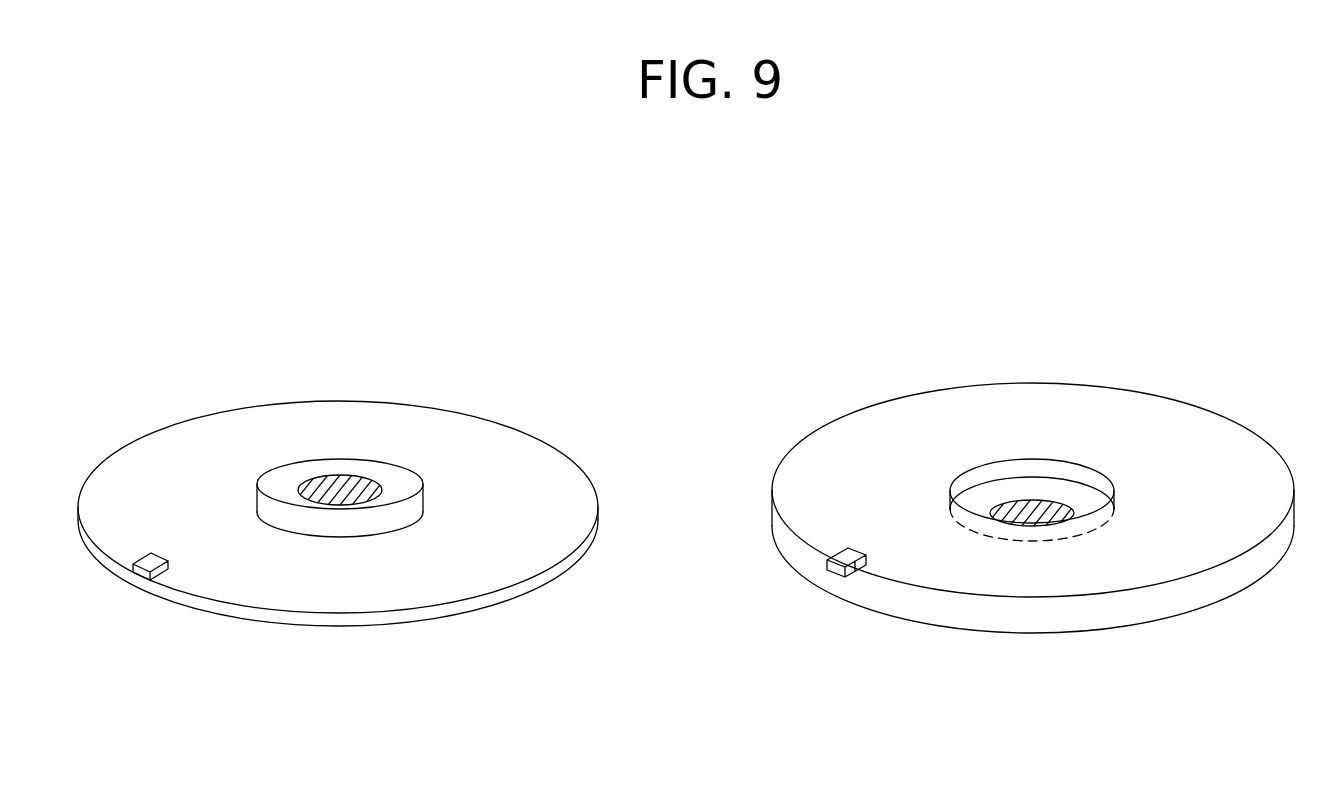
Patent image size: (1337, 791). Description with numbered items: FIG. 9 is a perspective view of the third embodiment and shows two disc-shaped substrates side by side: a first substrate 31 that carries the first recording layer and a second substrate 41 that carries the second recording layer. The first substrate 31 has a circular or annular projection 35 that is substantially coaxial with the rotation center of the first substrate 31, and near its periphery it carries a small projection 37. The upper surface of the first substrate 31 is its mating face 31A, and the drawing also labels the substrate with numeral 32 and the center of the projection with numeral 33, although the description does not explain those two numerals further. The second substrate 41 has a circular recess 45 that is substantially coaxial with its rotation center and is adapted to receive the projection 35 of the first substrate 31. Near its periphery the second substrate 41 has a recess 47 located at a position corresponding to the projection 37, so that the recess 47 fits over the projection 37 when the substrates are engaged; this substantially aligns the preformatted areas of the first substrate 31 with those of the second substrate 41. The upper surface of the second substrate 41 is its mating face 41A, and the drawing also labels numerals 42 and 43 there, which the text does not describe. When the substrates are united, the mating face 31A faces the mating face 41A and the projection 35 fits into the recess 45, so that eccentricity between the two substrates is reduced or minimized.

The first substrate 31 is at (338, 471).
The mating face of the first substrate 31A is at (514, 452).
The side surface / peripheral portion of disk 32 is at (266, 617).
The hatched central electrode / contact portion 33 is at (352, 482).
The circular projection 35 is at (293, 475).
The projection 37 is at (142, 553).
The second substrate 41 is at (1028, 467).
The mating face of the second substrate 41A is at (1175, 430).
The side surface / peripheral portion of disk 42 is at (935, 620).
The hatched central electrode / contact portion 43 is at (1047, 507).
The circular recess 45 is at (995, 492).
The recess 47 is at (838, 548).